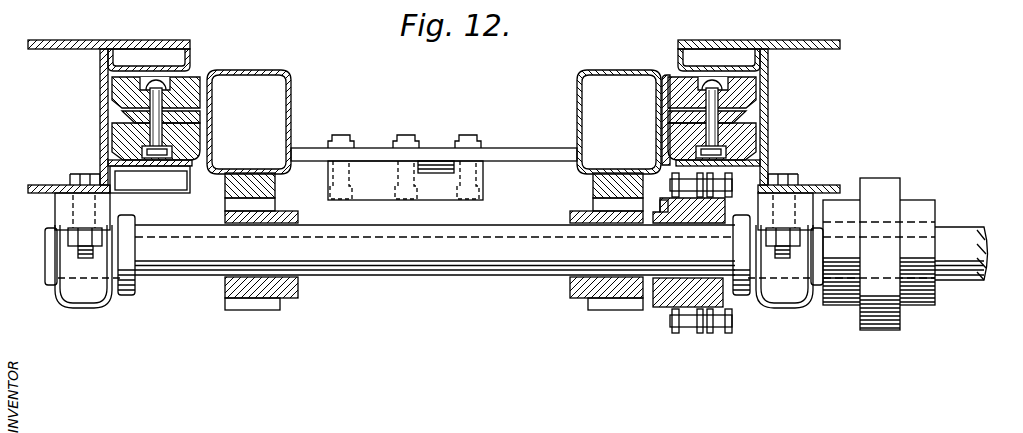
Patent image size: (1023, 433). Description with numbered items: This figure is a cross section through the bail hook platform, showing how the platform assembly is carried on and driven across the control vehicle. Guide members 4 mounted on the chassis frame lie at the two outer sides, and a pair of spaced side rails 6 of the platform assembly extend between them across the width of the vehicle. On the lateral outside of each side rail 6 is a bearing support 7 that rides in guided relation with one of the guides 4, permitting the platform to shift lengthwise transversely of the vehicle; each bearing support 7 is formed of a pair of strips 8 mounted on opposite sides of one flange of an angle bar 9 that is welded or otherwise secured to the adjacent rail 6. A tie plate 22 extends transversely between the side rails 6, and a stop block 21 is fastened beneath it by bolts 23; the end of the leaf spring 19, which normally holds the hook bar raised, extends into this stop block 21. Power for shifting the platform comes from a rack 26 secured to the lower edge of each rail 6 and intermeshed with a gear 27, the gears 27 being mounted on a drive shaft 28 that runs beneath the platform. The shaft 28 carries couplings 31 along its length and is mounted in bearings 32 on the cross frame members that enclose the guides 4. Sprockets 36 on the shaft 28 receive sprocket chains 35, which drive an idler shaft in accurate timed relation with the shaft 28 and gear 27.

The guide member 4 is at (100, 82).
The side rail 6 is at (282, 82).
The bearing support 7 is at (121, 57).
The strip 8 is at (760, 135).
The angle bar 9 is at (664, 74).
The leaf spring 19 is at (446, 174).
The stop block 21 is at (355, 178).
The tie plate 22 is at (522, 157).
The bolt 23 is at (462, 140).
The rack 26 is at (262, 190).
The gear 27 is at (270, 306).
The drive shaft 28 is at (512, 278).
The coupling 31 is at (890, 322).
The bearing 32 is at (95, 300).
The sprocket chain 35 is at (680, 337).
The sprocket 36 is at (722, 325).